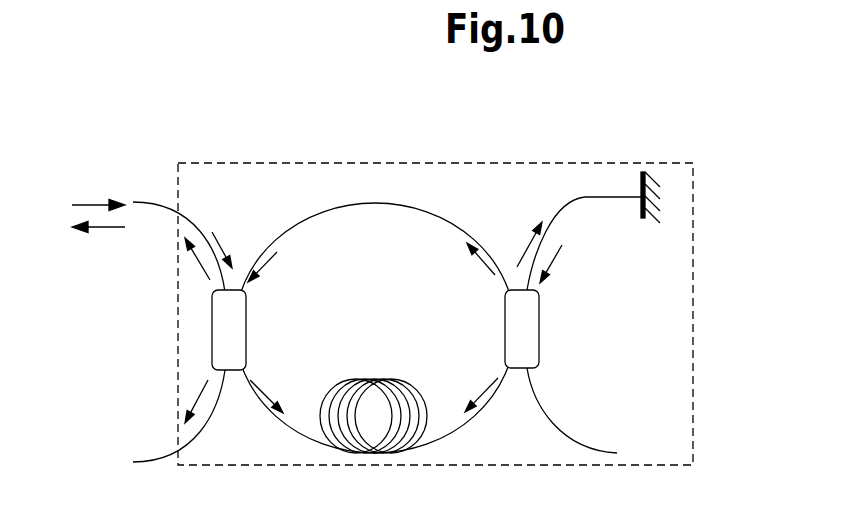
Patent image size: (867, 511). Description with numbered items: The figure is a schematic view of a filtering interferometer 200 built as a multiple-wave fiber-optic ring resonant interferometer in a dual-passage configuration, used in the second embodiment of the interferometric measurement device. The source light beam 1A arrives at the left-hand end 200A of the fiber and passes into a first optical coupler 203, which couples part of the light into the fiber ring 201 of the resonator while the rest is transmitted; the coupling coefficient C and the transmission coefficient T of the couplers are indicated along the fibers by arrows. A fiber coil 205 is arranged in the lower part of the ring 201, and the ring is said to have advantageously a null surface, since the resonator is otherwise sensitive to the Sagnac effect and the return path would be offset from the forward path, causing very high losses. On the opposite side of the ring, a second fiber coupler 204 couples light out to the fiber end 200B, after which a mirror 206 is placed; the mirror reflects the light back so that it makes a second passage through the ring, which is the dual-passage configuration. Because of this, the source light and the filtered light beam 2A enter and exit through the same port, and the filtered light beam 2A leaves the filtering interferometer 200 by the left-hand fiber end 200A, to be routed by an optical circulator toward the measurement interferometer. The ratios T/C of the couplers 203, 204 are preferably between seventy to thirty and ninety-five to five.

The source light beam 1A is at (87, 204).
The filtered light beam 2A is at (108, 228).
The filtering interferometer 200 is at (711, 400).
The first optical fiber end (input/output port) 200A is at (148, 201).
The second optical fiber end 200B is at (582, 203).
The fiber ring 201 is at (338, 203).
The first optical coupler 203 is at (212, 333).
The second fiber coupler 204 is at (539, 345).
The fiber coil 205 is at (412, 400).
The mirror 206 is at (642, 183).